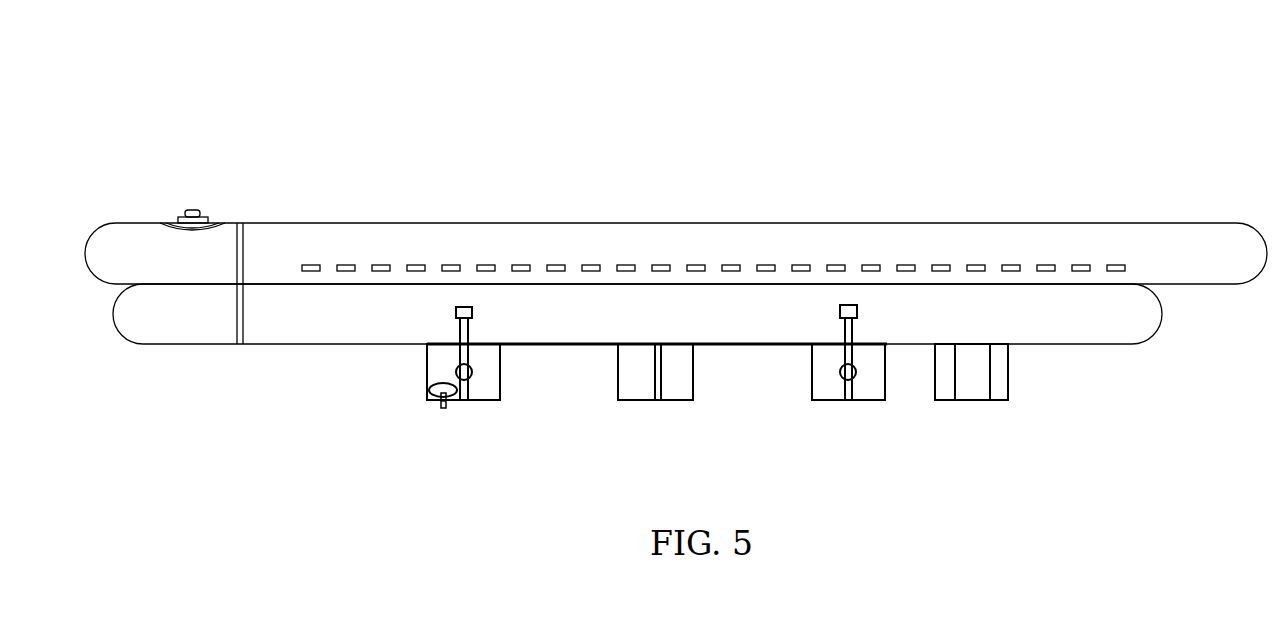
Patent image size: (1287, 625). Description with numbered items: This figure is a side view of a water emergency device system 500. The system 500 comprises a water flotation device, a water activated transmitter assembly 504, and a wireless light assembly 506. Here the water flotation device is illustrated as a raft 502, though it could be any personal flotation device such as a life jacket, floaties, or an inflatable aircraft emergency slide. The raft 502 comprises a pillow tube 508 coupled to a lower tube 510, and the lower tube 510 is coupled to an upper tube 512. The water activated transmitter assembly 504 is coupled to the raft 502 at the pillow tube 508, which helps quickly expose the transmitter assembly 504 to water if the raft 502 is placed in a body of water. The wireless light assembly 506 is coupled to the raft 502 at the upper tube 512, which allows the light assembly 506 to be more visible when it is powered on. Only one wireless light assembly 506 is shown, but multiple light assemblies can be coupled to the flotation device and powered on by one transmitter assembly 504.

The water emergency device system 500 is at (676, 252).
The raft 502 is at (676, 236).
The water activated transmitter assembly 504 is at (440, 410).
The wireless light assembly 506 is at (212, 217).
The pillow tube 508 is at (502, 398).
The lower tube 510 is at (288, 323).
The upper tube 512 is at (380, 232).